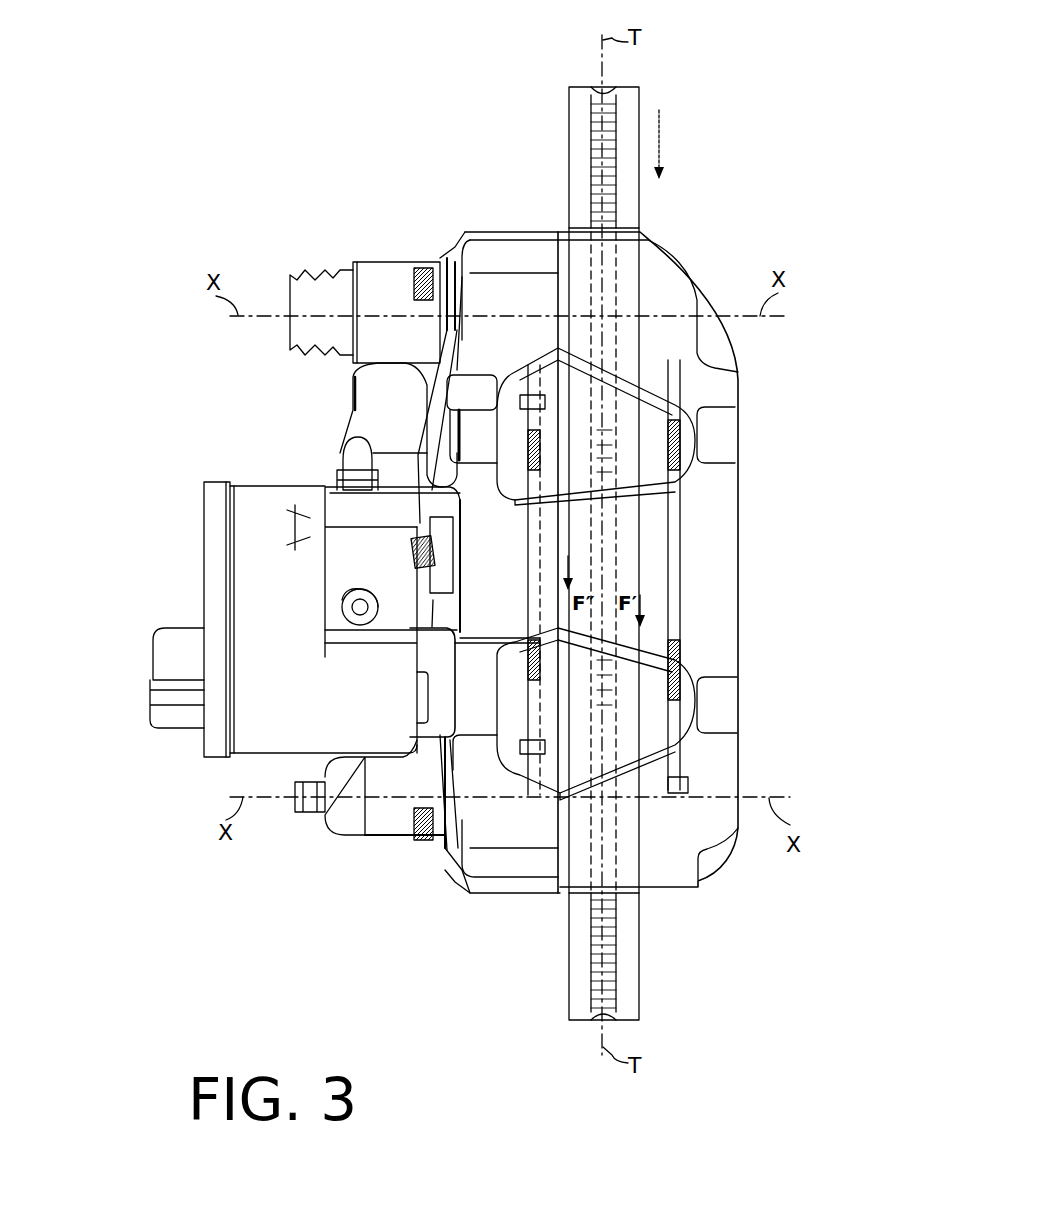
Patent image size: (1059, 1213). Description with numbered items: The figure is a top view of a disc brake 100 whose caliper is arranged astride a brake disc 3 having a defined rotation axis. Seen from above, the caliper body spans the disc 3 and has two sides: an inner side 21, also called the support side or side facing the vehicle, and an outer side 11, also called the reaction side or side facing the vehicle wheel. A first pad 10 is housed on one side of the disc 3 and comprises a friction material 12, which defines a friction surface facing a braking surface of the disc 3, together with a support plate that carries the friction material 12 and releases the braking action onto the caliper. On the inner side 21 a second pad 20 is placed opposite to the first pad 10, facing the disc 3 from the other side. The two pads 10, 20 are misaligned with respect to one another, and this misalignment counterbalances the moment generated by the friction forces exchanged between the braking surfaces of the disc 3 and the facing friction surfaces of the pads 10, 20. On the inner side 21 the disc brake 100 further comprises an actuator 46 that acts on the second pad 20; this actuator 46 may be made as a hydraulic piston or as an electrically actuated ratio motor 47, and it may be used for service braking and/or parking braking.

The disc brake 100 is at (765, 148).
The disc 3 is at (627, 108).
The outer side 11 is at (748, 535).
The second pad 20 is at (555, 450).
The first pad 10 is at (687, 713).
The friction material 12 is at (655, 680).
The inner side 21 is at (272, 430).
The actuator 46 is at (233, 619).
The electrically actuated ratio motor 47 is at (257, 578).